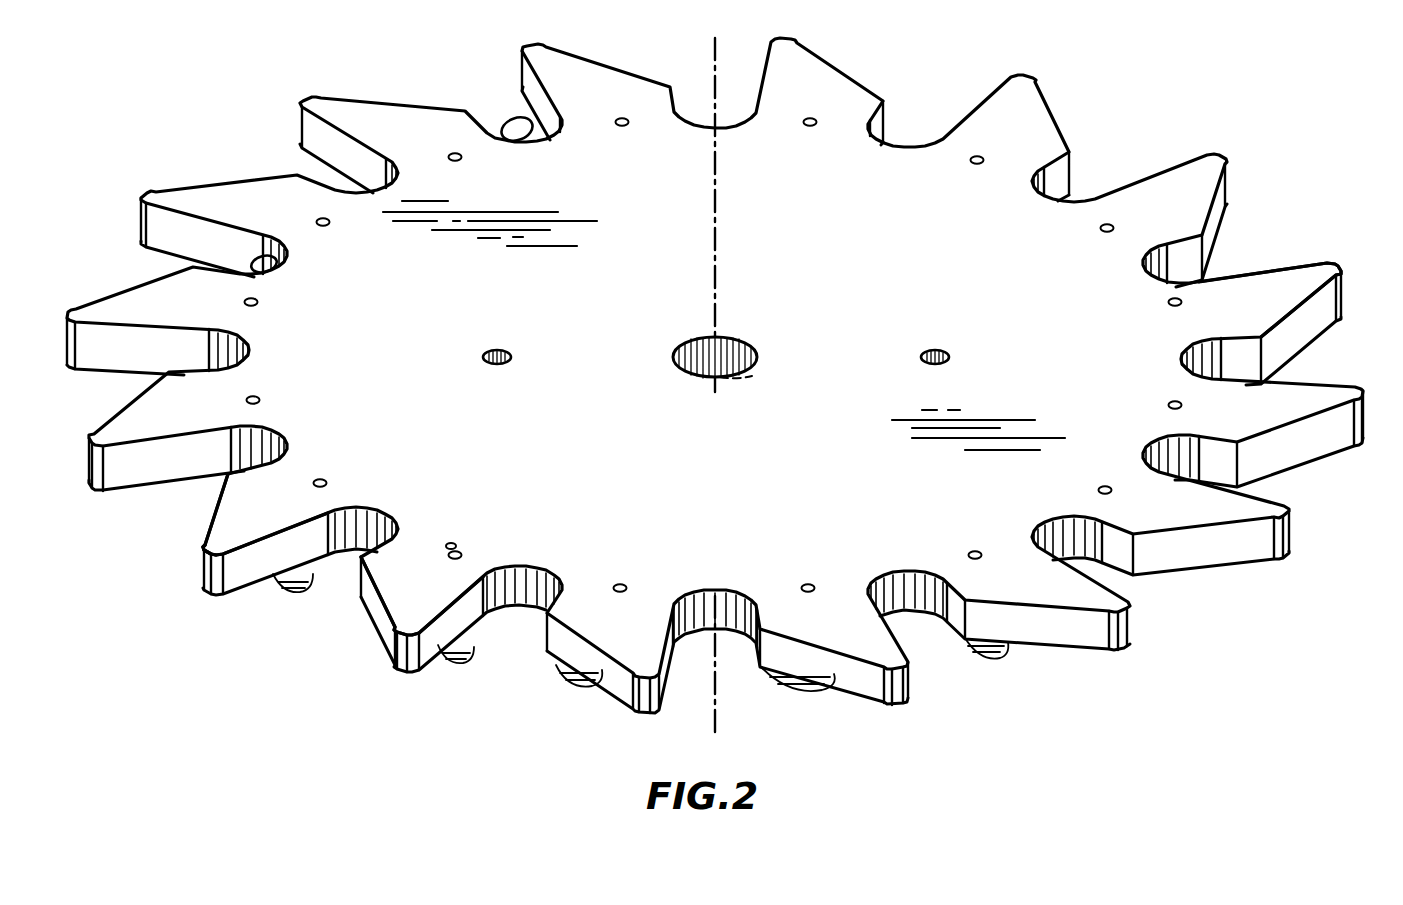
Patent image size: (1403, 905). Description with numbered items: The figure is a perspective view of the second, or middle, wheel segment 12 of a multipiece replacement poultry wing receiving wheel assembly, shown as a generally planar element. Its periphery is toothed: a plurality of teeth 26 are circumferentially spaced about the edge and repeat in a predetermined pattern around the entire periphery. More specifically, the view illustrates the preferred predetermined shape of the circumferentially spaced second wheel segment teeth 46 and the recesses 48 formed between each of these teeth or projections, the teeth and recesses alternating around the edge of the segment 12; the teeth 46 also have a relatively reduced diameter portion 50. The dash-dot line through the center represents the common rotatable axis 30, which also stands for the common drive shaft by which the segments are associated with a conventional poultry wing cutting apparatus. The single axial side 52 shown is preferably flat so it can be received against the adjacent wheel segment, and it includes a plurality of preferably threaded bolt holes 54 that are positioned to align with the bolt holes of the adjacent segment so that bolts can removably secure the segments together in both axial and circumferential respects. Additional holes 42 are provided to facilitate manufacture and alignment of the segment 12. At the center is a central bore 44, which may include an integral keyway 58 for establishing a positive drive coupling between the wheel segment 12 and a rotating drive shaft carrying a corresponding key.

The second wheel segment 12 is at (228, 716).
The teeth 26 is at (192, 190).
The common rotatable axis 30 is at (715, 205).
The additional holes 42 is at (503, 349).
The central bore 44 is at (738, 348).
The second wheel segment teeth 46 is at (205, 598).
The recesses 48 is at (514, 142).
The relatively reduced diameter portion 50 is at (297, 593).
The axial side 52 is at (598, 493).
The threaded bolt holes 54 is at (456, 547).
The keyway 58 is at (740, 387).